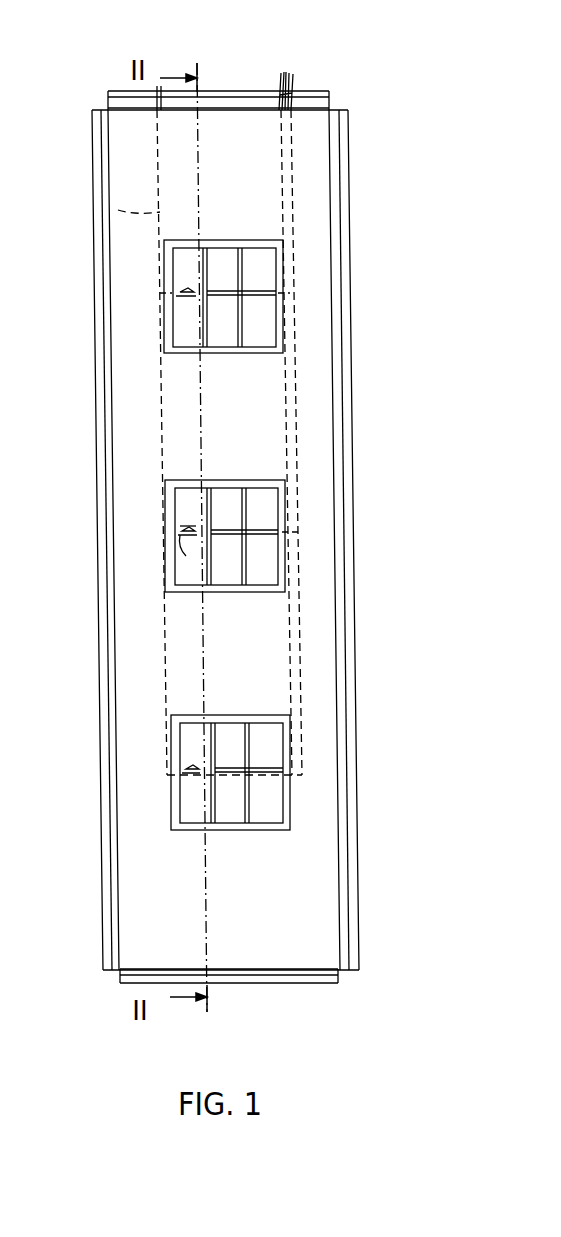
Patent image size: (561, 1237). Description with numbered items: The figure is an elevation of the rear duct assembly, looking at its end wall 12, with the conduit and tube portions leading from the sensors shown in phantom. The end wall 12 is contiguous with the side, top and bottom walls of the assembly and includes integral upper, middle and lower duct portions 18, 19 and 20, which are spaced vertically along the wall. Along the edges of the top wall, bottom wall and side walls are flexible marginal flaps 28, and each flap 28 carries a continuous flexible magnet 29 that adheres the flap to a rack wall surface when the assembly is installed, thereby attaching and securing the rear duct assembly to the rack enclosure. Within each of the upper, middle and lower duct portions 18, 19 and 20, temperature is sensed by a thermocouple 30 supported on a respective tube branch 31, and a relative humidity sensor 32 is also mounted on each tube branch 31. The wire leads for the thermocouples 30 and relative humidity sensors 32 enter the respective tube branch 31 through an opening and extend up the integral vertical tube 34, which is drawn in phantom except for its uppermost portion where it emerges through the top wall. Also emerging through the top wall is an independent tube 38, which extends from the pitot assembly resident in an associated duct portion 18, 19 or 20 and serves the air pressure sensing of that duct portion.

The end wall 12 is at (313, 858).
The upper duct portion 18 is at (187, 353).
The middle duct portion 19 is at (190, 594).
The lower duct portion 20 is at (190, 832).
The flexible marginal flap 28 is at (93, 250).
The continuous flexible magnet 29 is at (100, 308).
The thermocouple 30 is at (195, 525).
The tube branch 31 is at (187, 537).
The relative humidity sensor 32 is at (197, 532).
The integral vertical tube 34 is at (112, 205).
The independent tube 38 is at (277, 82).